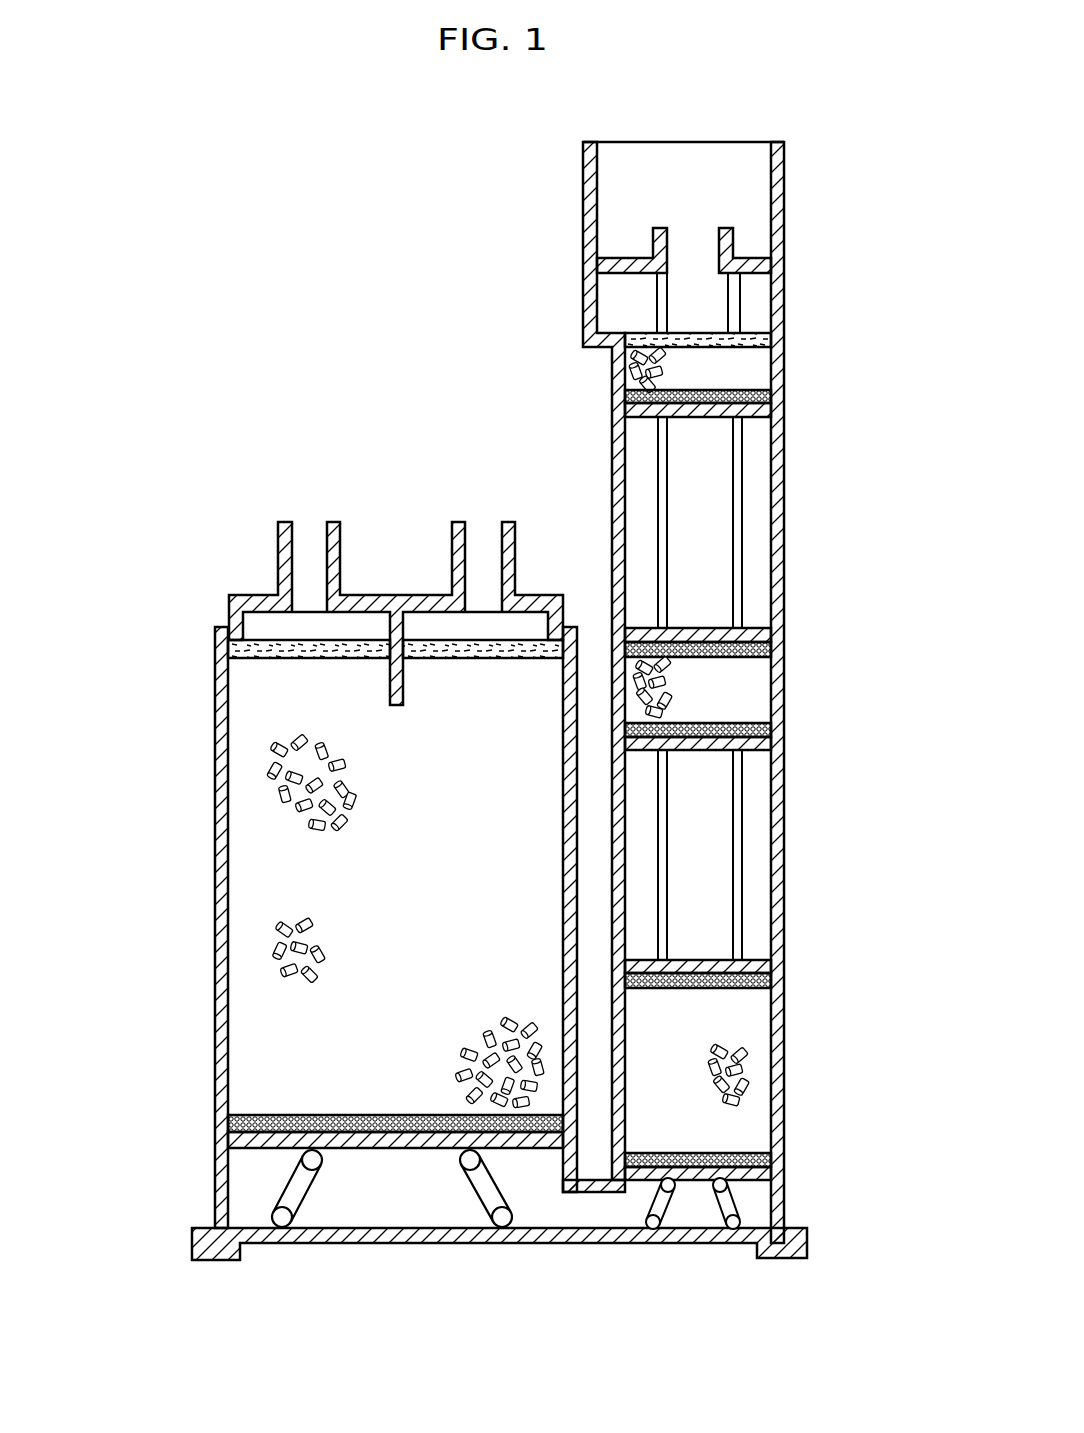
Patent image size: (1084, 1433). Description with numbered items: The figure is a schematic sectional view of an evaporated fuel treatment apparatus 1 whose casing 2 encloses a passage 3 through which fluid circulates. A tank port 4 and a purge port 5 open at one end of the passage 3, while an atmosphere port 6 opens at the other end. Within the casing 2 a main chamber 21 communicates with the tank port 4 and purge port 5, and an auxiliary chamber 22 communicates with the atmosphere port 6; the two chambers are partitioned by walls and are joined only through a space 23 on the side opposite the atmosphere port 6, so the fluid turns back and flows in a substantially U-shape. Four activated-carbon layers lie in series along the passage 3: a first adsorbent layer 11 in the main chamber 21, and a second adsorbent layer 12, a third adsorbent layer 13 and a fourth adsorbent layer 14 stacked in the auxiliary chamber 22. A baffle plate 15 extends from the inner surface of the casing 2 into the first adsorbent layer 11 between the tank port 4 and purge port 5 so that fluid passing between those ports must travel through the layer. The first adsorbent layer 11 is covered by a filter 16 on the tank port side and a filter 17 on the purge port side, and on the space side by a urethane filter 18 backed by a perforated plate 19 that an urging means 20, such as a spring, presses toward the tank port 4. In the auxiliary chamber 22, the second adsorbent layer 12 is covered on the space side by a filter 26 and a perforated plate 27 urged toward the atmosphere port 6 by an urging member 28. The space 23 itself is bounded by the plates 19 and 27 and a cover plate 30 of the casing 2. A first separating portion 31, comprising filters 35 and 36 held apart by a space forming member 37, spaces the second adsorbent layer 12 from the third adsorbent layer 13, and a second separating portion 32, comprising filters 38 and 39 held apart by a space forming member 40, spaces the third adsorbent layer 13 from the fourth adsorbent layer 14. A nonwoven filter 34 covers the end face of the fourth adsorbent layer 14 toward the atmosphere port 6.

The evaporated fuel treatment apparatus 1 is at (212, 603).
The casing 2 is at (220, 935).
The passage 3 is at (260, 877).
The tank port 4 is at (307, 540).
The purge port 5 is at (473, 530).
The atmosphere port 6 is at (683, 245).
The first adsorbent layer 11 is at (305, 712).
The second adsorbent layer 12 is at (730, 1023).
The third adsorbent layer 13 is at (732, 695).
The fourth adsorbent layer 14 is at (750, 380).
The baffle plate 15 is at (398, 687).
The filter 16 is at (325, 655).
The filter 17 is at (493, 648).
The filter 18 is at (352, 1118).
The plate 19 is at (410, 1135).
The urging means 20 is at (280, 1220).
The main chamber 21 is at (257, 1077).
The auxiliary chamber 22 is at (717, 867).
The space 23 is at (435, 1208).
The filter 26 is at (770, 1155).
The plate 27 is at (760, 1170).
The urging member 28 is at (727, 1210).
The cover plate 30 is at (573, 1243).
The first separating portion 31 is at (753, 818).
The second separating portion 32 is at (750, 500).
The filter 34 is at (772, 335).
The filter 35 is at (615, 985).
The filter 36 is at (770, 728).
The space forming member 37 is at (733, 908).
The filter 38 is at (772, 642).
The filter 39 is at (770, 398).
The space forming member 40 is at (735, 578).